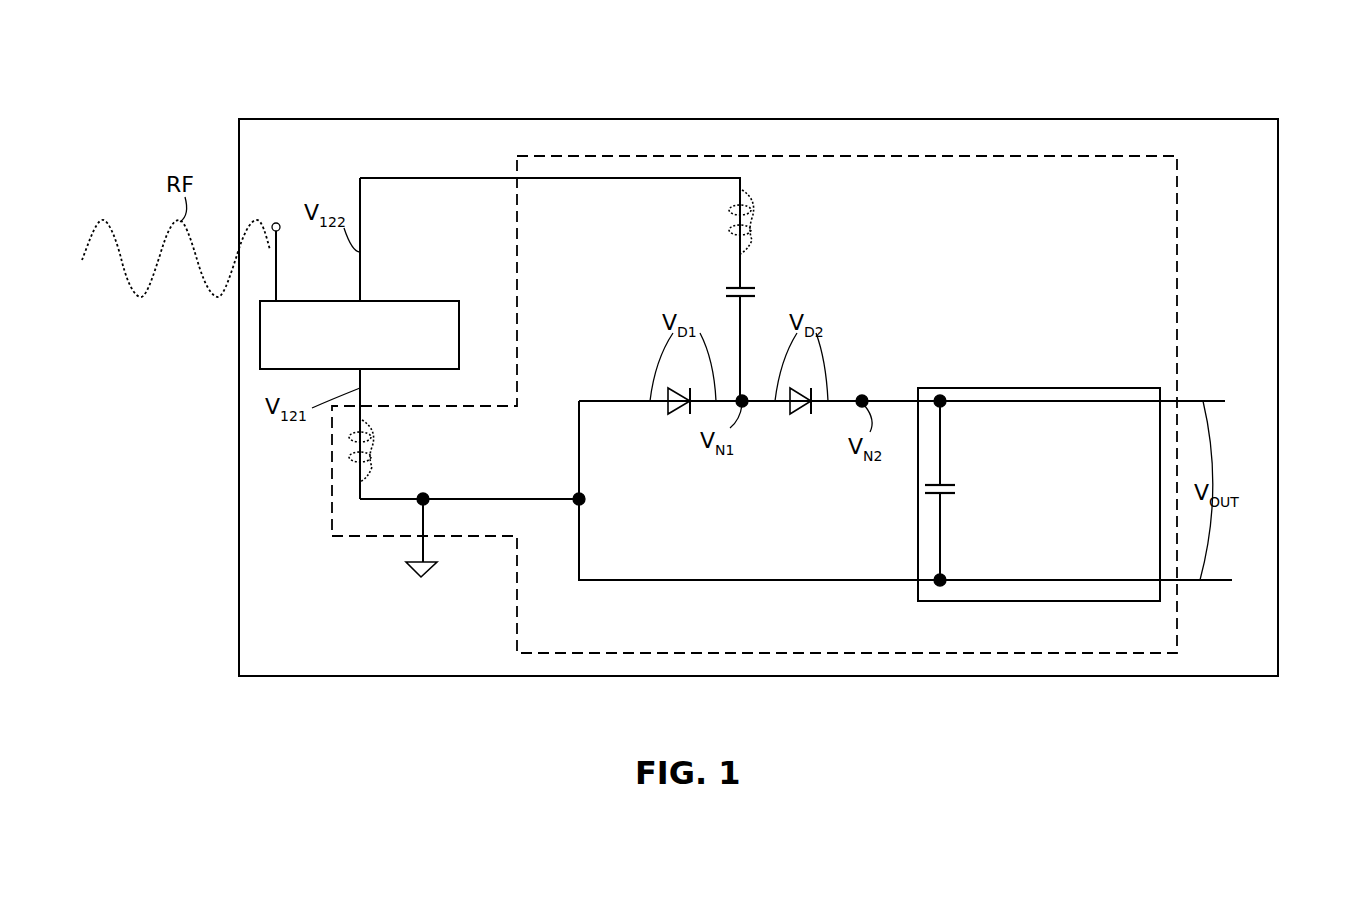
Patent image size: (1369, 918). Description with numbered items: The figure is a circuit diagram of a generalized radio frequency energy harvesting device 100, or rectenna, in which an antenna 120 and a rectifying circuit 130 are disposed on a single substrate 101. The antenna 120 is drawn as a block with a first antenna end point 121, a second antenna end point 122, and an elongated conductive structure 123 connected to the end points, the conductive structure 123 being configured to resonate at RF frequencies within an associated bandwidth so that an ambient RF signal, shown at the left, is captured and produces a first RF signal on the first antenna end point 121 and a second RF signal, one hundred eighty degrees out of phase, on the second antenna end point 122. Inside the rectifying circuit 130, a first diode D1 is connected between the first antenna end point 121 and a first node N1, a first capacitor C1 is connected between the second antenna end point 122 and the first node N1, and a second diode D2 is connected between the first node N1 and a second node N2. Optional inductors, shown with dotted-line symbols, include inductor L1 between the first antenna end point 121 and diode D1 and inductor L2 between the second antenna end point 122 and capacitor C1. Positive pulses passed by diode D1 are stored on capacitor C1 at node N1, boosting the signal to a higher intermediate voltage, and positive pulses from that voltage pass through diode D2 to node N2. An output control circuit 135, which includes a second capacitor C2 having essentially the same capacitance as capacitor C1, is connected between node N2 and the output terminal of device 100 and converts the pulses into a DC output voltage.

The RF energy harvesting device 100 is at (259, 66).
The substrate 101 is at (1212, 155).
The antenna 120 is at (459, 326).
The first antenna end point 121 is at (360, 374).
The second antenna end point 122 is at (360, 297).
The elongated conductive structure 123 is at (276, 270).
The rectifying circuit 130 is at (754, 404).
The output control circuit 135 is at (1039, 494).
The inductor L1 is at (372, 457).
The inductor L2 is at (753, 221).
The capacitor C1 is at (736, 287).
The capacitor C2 is at (946, 484).
The diode D1 is at (680, 396).
The diode D2 is at (800, 411).
The first node N1 is at (745, 398).
The second node N2 is at (865, 398).